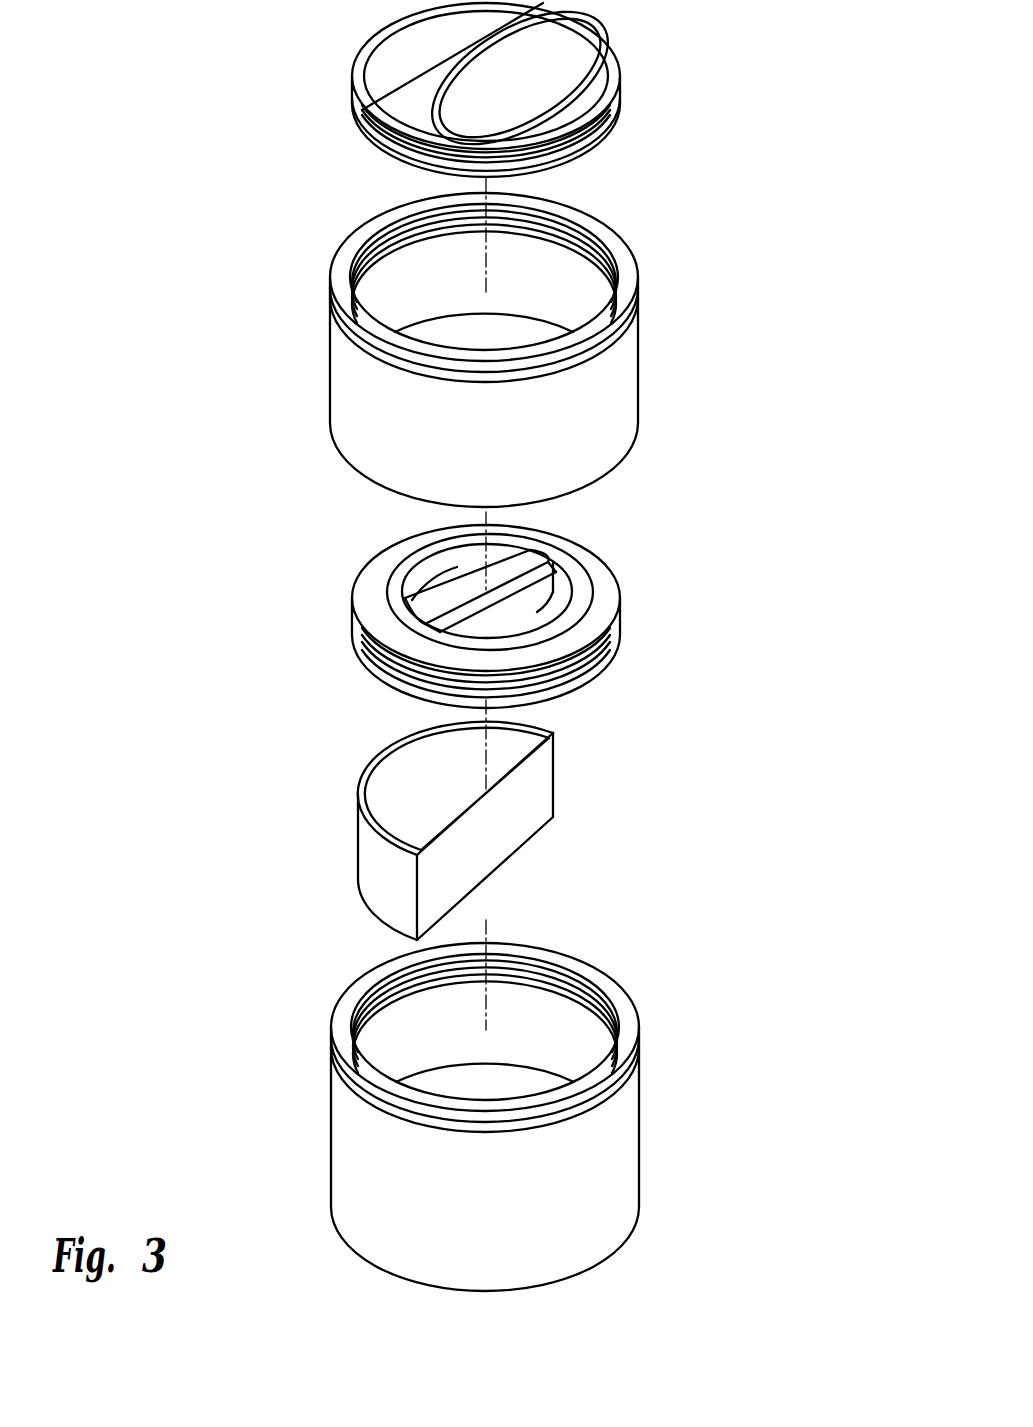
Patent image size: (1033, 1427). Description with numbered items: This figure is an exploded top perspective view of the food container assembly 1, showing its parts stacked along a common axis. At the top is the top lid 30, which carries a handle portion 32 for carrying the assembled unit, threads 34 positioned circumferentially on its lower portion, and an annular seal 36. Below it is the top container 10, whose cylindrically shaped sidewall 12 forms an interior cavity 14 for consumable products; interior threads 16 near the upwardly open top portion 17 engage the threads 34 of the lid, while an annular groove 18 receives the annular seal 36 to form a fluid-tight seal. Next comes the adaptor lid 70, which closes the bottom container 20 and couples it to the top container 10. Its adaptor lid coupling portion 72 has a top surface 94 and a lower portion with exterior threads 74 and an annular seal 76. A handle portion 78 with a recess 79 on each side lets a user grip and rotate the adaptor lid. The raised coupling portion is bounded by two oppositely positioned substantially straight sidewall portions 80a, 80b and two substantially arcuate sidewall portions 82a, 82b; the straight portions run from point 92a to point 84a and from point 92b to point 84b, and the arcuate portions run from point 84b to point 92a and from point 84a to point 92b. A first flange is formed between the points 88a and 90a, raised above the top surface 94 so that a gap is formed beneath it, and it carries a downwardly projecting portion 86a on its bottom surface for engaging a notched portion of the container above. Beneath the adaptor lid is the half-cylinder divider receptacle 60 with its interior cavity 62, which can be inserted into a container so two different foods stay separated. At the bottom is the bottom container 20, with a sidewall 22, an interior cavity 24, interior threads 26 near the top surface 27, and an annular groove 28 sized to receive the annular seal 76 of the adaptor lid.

The food container assembly 1 is at (160, 85).
The top container 10 is at (682, 373).
The sidewall 12 is at (350, 402).
The interior cavity 14 is at (393, 307).
The interior threads 16 is at (372, 236).
The top portion 17 is at (632, 283).
The annular groove 18 is at (567, 223).
The bottom container 20 is at (682, 1107).
The sidewall 22 is at (350, 1170).
The interior cavity 24 is at (393, 1058).
The interior threads 26 is at (393, 1000).
The top surface 27 is at (630, 1030).
The annular groove 28 is at (553, 962).
The top lid 30 is at (672, 80).
The handle portion 32 is at (437, 70).
The threads 34 is at (420, 152).
The annular seal 36 is at (553, 158).
The divider receptacle 60 is at (605, 790).
The interior cavity 62 is at (400, 778).
The adaptor lid 70 is at (648, 550).
The adaptor lid coupling portion 72 is at (590, 540).
The exterior threads 74 is at (420, 683).
The annular seal 76 is at (570, 698).
The handle portion 78 is at (490, 590).
The recess 79 is at (467, 577).
The substantially straight sidewall portion 80a is at (596, 650).
The substantially straight sidewall portion 80b is at (422, 545).
The substantially arcuate sidewall portion 82a is at (608, 603).
The substantially arcuate sidewall portion 82b is at (405, 620).
The point 84a is at (540, 695).
The point 84b is at (427, 545).
The downwardly projecting portion 86a is at (437, 700).
The point 88a is at (588, 670).
The point 90a is at (408, 656).
The point 92a is at (606, 627).
The point 92b is at (392, 575).
The top surface 94 is at (368, 590).